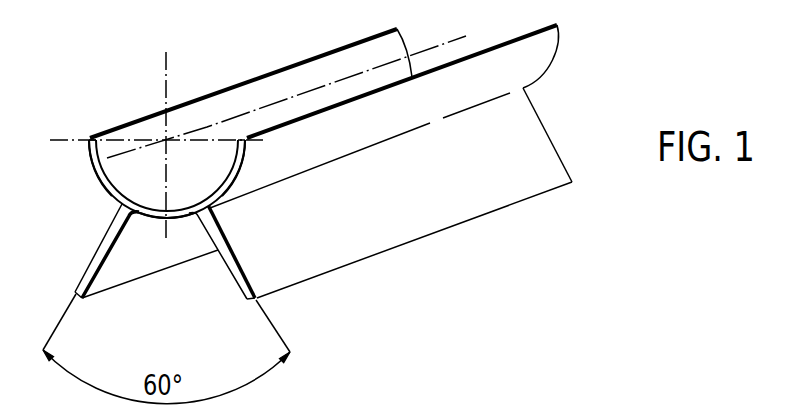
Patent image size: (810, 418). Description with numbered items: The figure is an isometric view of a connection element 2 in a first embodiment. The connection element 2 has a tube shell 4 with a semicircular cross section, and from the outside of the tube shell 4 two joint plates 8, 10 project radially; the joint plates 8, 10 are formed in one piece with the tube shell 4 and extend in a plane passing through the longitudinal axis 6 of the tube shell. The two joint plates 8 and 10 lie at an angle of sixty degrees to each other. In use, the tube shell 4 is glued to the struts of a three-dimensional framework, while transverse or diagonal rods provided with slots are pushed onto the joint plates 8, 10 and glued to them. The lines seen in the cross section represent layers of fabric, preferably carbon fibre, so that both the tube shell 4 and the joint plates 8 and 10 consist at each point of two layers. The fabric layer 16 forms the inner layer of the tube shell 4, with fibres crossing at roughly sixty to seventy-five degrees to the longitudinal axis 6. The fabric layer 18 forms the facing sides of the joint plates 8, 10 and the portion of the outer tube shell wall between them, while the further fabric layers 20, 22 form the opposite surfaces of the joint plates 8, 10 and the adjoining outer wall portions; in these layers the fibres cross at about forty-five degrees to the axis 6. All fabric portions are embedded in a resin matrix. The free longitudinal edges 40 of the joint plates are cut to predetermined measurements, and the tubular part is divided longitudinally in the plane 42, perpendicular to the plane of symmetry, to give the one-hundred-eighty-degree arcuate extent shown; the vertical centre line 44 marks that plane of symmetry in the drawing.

The connection element 2 is at (258, 77).
The tube shell 4 is at (335, 58).
The axis 6 is at (465, 35).
The joint plate 8 is at (249, 268).
The joint plate 10 is at (110, 276).
The fabric layer 16 is at (111, 194).
The fabric layer 18 is at (148, 217).
The fabric layer 20 is at (250, 167).
The fabric layer 22 is at (102, 183).
The free longitudinal edge 40 is at (355, 263).
The plane 42 is at (55, 138).
The vertical center line 44 is at (166, 52).